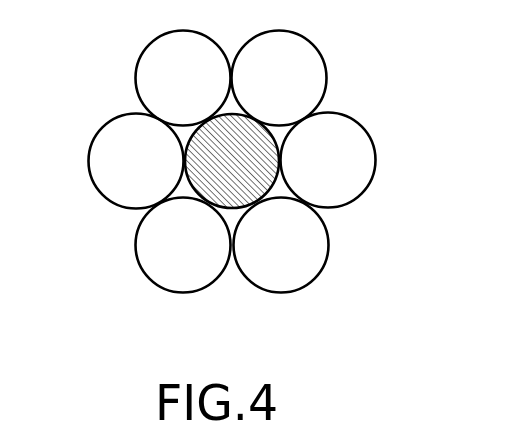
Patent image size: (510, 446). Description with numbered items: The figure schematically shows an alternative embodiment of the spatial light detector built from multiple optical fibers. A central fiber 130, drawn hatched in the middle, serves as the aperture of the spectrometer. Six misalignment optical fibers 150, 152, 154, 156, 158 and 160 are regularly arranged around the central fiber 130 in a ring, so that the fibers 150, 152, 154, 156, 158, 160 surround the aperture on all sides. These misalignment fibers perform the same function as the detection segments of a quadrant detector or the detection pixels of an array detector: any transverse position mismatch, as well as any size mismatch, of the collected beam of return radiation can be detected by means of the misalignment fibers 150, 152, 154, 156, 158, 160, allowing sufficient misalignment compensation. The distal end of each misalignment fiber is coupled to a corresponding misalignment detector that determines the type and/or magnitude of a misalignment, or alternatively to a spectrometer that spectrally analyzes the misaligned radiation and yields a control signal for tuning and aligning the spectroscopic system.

The central fiber 130 is at (273, 133).
The misalignment optical fiber 150 is at (375, 152).
The misalignment optical fiber 152 is at (328, 242).
The misalignment optical fiber 154 is at (136, 250).
The misalignment optical fiber 156 is at (89, 165).
The misalignment optical fiber 158 is at (133, 74).
The misalignment optical fiber 160 is at (325, 76).